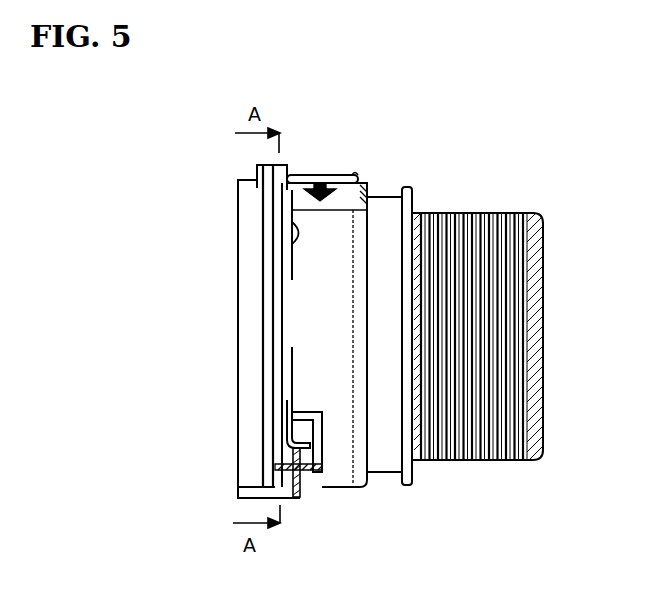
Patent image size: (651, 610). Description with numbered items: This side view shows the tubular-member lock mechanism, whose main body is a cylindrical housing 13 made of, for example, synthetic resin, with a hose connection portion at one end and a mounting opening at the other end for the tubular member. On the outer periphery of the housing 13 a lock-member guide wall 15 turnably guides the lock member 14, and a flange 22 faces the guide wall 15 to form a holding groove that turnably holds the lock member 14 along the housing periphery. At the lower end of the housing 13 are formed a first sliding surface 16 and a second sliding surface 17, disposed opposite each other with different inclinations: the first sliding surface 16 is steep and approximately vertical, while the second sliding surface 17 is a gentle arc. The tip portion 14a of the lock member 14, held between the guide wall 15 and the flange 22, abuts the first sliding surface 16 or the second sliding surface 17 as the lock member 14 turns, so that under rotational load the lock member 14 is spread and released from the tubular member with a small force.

The housing 13 is at (405, 178).
The lock member 14 is at (317, 181).
The tip portion 14a is at (302, 462).
The lock-member guide wall 15 is at (300, 229).
The first sliding surface 16 is at (310, 498).
The second sliding surface 17 is at (290, 435).
The flange 22 is at (268, 318).